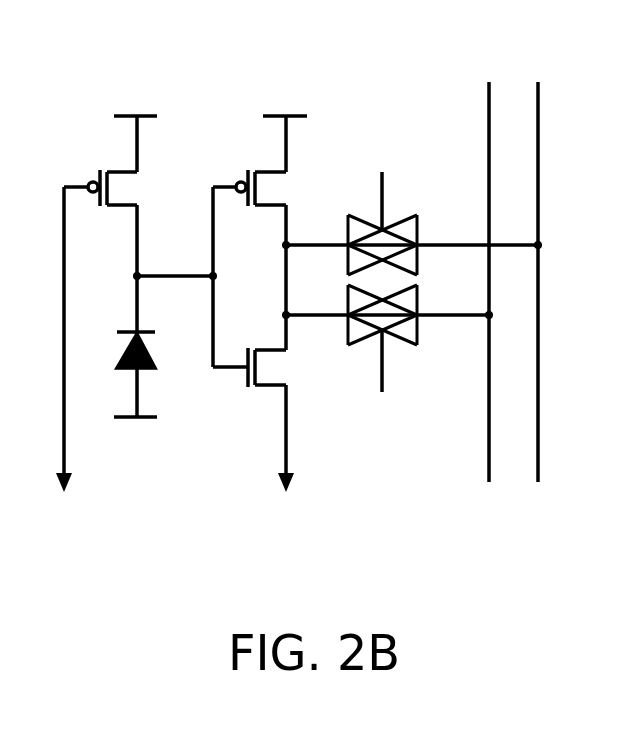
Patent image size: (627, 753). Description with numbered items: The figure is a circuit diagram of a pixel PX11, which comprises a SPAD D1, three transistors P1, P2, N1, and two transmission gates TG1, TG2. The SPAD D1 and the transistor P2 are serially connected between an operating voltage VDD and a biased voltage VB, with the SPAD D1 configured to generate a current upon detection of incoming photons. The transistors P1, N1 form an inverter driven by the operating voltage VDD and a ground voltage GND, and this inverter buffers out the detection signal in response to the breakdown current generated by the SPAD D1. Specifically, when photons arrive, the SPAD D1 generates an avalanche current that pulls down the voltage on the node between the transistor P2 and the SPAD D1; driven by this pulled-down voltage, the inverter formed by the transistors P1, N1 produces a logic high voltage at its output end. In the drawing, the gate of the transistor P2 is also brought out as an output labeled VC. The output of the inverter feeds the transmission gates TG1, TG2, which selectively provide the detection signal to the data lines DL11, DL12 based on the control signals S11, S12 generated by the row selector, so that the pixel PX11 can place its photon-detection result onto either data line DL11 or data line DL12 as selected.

The operating voltage VDD is at (210, 125).
The transistor P2 is at (116, 223).
The transistor P1 is at (275, 260).
The transistor N1 is at (281, 411).
The SPAD D1 is at (152, 346).
The biased voltage VB is at (135, 438).
The output voltage VC is at (63, 362).
The ground voltage GND is at (286, 505).
The transmission gate TG1 is at (412, 226).
The transmission gate TG2 is at (387, 335).
The control signal S11 is at (380, 182).
The control signal S12 is at (381, 381).
The data line DL11 is at (481, 263).
The data line DL12 is at (546, 263).
The pixel PX11 is at (612, 572).